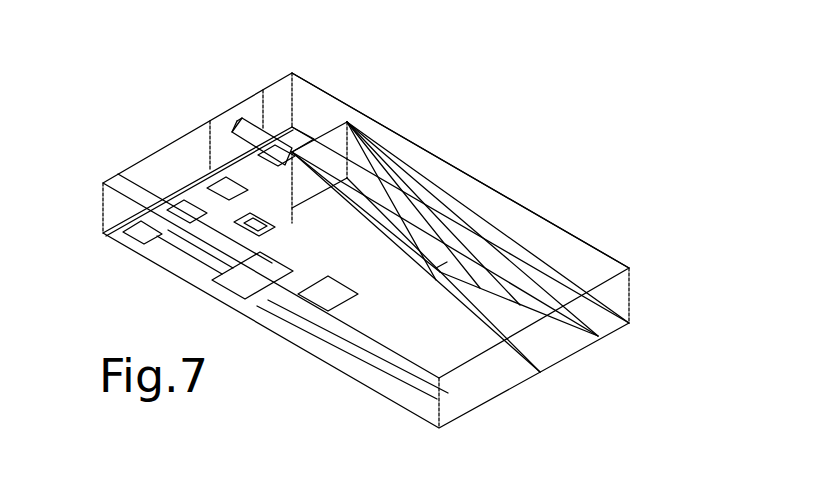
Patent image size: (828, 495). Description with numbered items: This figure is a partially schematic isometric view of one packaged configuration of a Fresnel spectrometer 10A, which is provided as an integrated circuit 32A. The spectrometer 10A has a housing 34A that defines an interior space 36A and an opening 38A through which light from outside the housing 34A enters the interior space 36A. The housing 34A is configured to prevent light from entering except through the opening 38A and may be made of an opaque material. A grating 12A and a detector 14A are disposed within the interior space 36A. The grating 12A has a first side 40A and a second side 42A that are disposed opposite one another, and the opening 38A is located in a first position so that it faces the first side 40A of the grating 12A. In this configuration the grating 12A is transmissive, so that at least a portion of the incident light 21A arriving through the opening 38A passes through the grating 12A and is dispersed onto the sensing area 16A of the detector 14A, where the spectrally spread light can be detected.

The Fresnel spectrometer 10A is at (184, 93).
The grating 12A is at (327, 137).
The detector 14A is at (273, 323).
The sensing area 16A is at (420, 258).
The incident light 21A is at (243, 120).
The integrated circuit 32A is at (165, 249).
The housing 34A is at (470, 182).
The interior space 36A is at (160, 176).
The opening 38A is at (223, 120).
The first side 40A is at (323, 142).
The second side 42A is at (328, 150).